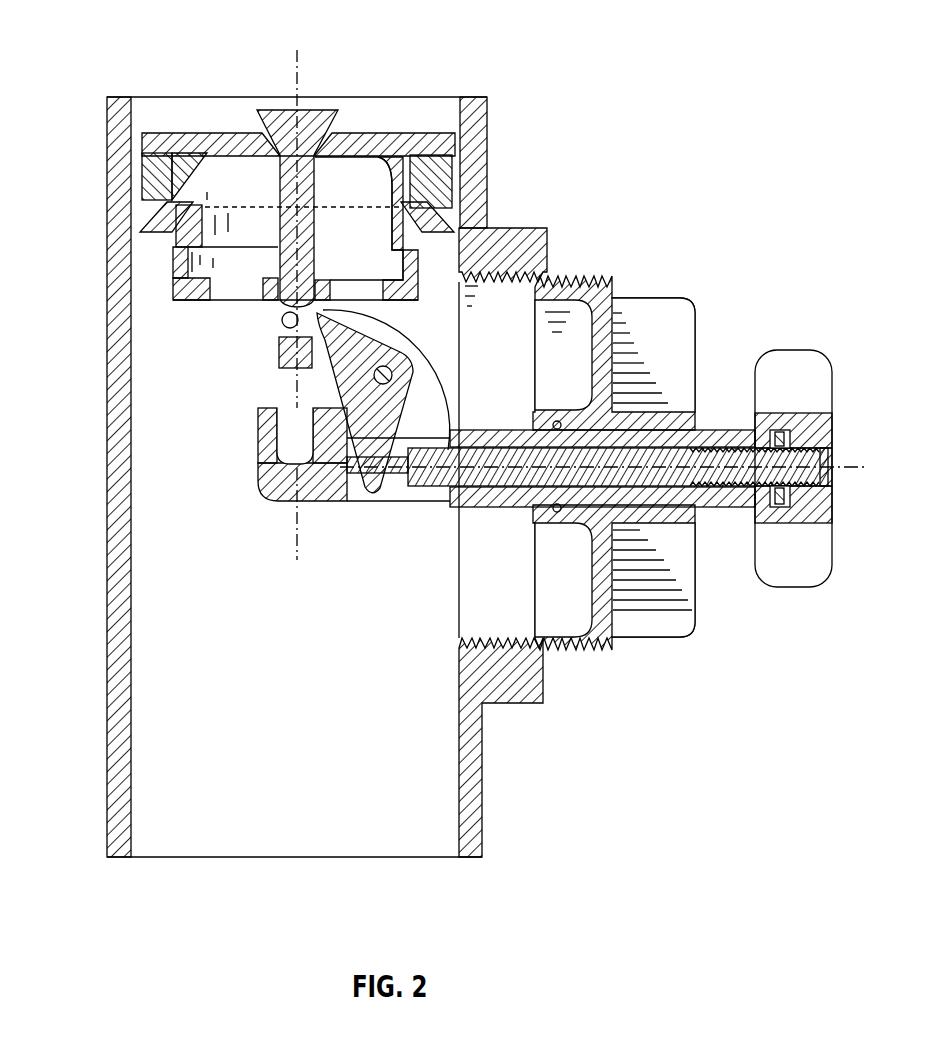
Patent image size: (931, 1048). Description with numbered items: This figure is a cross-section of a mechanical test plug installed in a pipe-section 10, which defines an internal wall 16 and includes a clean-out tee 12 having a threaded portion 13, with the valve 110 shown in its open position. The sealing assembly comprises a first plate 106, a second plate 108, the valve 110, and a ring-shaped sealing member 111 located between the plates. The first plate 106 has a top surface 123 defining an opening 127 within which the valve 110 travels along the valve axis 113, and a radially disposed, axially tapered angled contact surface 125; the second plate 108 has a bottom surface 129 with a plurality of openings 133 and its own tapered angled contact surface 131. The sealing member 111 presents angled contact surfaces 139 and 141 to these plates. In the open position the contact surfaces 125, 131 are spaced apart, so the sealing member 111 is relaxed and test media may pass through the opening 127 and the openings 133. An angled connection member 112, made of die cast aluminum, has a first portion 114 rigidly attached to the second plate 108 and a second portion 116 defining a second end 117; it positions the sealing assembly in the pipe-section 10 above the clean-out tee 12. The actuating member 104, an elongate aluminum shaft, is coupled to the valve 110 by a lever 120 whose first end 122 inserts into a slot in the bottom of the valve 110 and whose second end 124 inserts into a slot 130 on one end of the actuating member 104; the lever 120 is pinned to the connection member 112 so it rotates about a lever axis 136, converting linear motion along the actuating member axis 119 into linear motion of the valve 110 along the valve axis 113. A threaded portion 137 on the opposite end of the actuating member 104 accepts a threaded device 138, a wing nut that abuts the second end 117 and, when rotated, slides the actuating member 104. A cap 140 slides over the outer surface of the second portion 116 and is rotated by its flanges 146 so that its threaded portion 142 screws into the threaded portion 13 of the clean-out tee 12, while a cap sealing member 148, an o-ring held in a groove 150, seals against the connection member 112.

The pipe-section 10 is at (522, 163).
The clean-out tee 12 is at (540, 212).
The threaded portion 13 is at (507, 280).
The internal wall 16 is at (359, 473).
The actuating member 104 is at (680, 470).
The first plate 106 is at (313, 146).
The second plate 108 is at (198, 297).
The valve 110 is at (287, 210).
The sealing member 111 is at (482, 162).
The angled connection member 112 is at (272, 490).
The valve axis 113 is at (300, 65).
The first portion 114 is at (246, 446).
The second portion 116 is at (437, 514).
The second end 117 is at (757, 493).
The actuating member axis 119 is at (853, 470).
The lever 120 is at (446, 370).
The first end 122 is at (286, 320).
The top surface 123 is at (207, 130).
The second end 124 is at (367, 465).
The angled contact surface 125 is at (150, 147).
The opening 127 is at (326, 148).
The bottom surface 129 is at (406, 297).
The slot 130 is at (372, 458).
The angled contact surface 131 is at (147, 215).
The openings 133 is at (356, 283).
The lever axis 136 is at (395, 372).
The threaded portion 137 is at (792, 455).
The threaded device 138 is at (797, 363).
The angled contact surface 139 is at (185, 167).
The cap 140 is at (636, 657).
The angled contact surface 141 is at (183, 189).
The threaded portion 142 is at (587, 283).
The flanges 146 is at (672, 320).
The cap sealing member 148 is at (555, 510).
The groove 150 is at (292, 345).